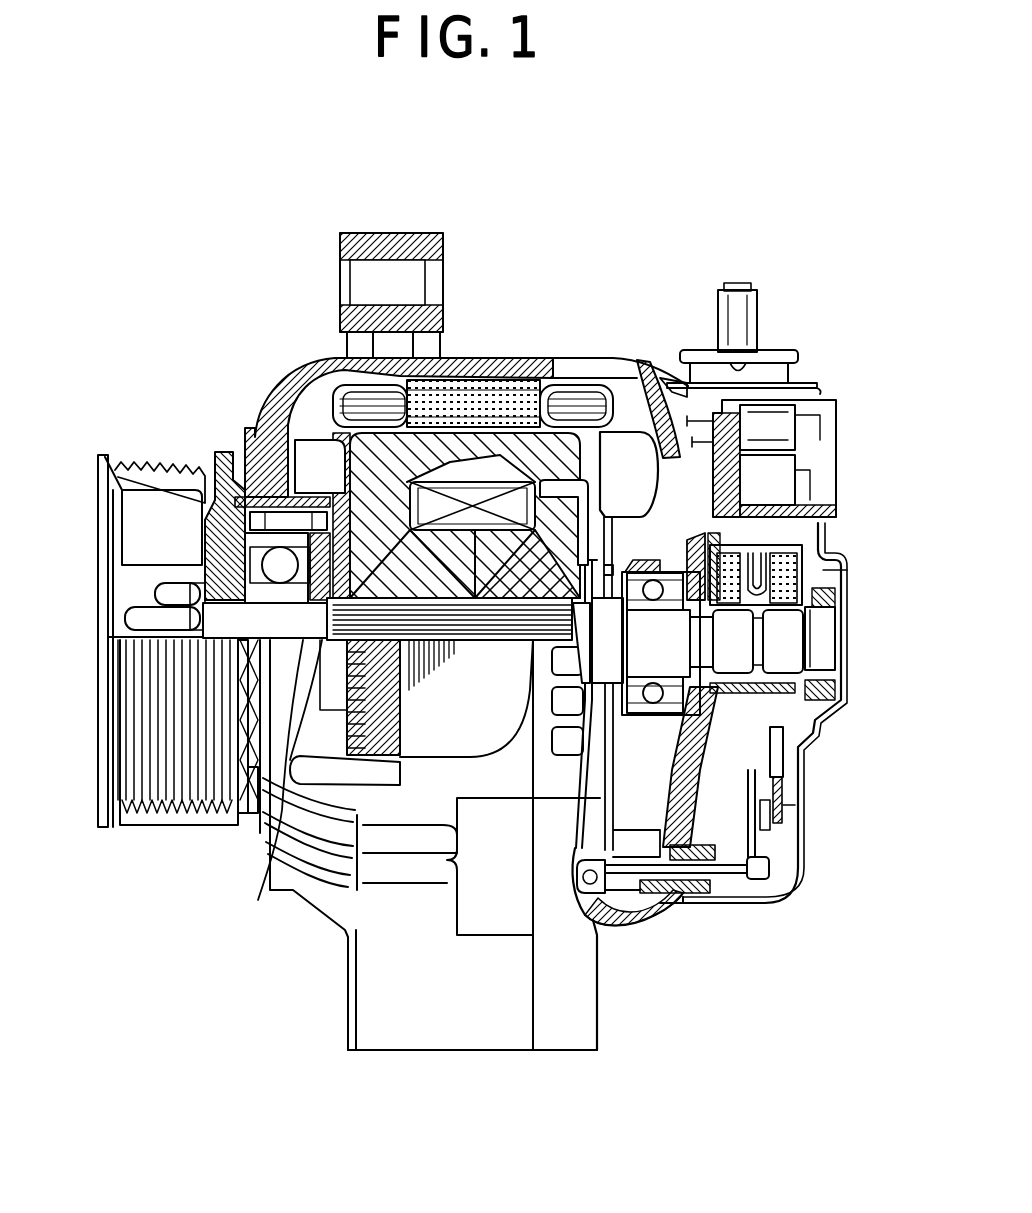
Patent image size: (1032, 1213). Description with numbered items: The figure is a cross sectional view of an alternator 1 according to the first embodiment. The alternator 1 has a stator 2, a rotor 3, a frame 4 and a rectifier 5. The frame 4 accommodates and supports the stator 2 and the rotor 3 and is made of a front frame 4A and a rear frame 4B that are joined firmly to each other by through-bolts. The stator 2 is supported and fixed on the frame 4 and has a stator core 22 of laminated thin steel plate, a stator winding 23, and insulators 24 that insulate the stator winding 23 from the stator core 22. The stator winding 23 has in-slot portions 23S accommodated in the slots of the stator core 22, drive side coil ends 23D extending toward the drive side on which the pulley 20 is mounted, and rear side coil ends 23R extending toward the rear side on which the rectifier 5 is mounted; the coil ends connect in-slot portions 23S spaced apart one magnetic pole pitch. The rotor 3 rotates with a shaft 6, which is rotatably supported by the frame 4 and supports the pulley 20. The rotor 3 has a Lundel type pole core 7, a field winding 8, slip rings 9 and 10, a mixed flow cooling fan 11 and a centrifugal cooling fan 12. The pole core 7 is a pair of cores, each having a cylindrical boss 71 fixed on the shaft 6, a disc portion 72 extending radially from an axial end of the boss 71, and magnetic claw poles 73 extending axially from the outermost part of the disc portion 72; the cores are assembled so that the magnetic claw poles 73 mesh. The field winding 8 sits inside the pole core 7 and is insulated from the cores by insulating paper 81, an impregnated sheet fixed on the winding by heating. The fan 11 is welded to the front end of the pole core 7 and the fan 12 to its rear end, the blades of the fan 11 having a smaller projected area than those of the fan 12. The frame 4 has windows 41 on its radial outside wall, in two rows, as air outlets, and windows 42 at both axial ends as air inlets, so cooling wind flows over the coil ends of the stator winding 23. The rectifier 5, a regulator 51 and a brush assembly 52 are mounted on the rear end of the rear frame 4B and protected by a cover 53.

The alternator 1 is at (604, 224).
The stator 2 is at (581, 457).
The rotor 3 is at (298, 430).
The frame 4 is at (500, 898).
The front frame 4A is at (400, 1032).
The rear frame 4B is at (573, 1038).
The rectifier 5 is at (777, 768).
The shaft 6 is at (200, 563).
The Lundel type pole core 7 is at (615, 368).
The field winding 8 is at (473, 488).
The slip ring 9 is at (740, 630).
The slip ring 10 is at (787, 655).
The mixed flow cooling fan 11 is at (292, 462).
The centrifugal cooling fan 12 is at (637, 487).
The pulley 20 is at (110, 452).
The stator core 22 is at (445, 400).
The stator winding 23 is at (580, 395).
The in-slot portions 23S is at (455, 380).
The drive side coil ends 23D is at (340, 405).
The rear side coil ends 23R is at (611, 378).
The insulators 24 is at (556, 400).
The windows 41 is at (306, 428).
The windows 42 is at (253, 480).
The regulator 51 is at (822, 500).
The brush assembly 52 is at (800, 573).
The cover 53 is at (800, 880).
The cylindrical boss 71 is at (275, 880).
The disc portion 72 is at (210, 803).
The magnetic claw poles 73 is at (415, 380).
The insulating paper 81 is at (450, 472).